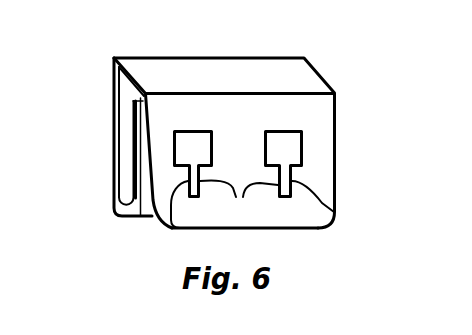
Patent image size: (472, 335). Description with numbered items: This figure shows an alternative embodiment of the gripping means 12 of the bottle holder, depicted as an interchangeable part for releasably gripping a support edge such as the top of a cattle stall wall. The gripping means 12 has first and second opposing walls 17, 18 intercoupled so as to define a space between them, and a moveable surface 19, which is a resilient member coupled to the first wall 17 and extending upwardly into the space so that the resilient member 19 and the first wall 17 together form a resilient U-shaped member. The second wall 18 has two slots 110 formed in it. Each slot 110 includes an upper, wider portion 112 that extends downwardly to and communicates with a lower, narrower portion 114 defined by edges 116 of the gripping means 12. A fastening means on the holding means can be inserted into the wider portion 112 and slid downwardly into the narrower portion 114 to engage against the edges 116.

The gripping means 12 is at (332, 59).
The first wall 17 is at (113, 131).
The second wall 18 is at (298, 213).
The moveable surface 19 is at (128, 153).
The slot 110 is at (214, 143).
The upper, wider portion 112 is at (192, 142).
The lower, narrower portion 114 is at (334, 206).
The edges 116 is at (239, 200).